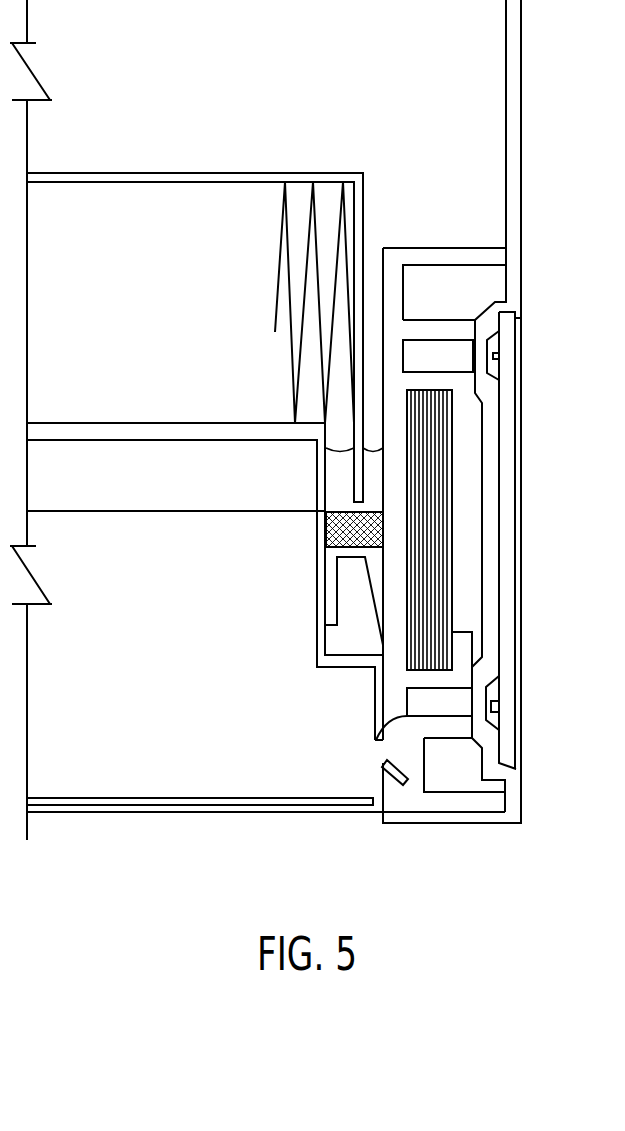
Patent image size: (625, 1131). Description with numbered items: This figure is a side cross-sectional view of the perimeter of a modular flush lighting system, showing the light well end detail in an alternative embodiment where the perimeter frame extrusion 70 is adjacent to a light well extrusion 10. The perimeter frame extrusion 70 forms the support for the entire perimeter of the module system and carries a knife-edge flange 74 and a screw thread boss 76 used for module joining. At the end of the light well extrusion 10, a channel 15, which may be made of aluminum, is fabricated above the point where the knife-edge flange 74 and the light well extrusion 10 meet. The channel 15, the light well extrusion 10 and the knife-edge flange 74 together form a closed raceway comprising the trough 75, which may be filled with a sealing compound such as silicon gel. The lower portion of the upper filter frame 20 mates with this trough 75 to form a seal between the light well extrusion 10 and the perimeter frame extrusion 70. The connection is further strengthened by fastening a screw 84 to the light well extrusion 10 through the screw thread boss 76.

The light well extrusion 10 is at (315, 546).
The channel 15 is at (325, 523).
The upper filter frame 20 is at (365, 200).
The perimeter frame extrusion 70 is at (416, 240).
The knife-edge flange 74 is at (330, 625).
The trough 75 is at (341, 477).
The screw thread boss 76 is at (374, 740).
The screw 84 is at (504, 706).